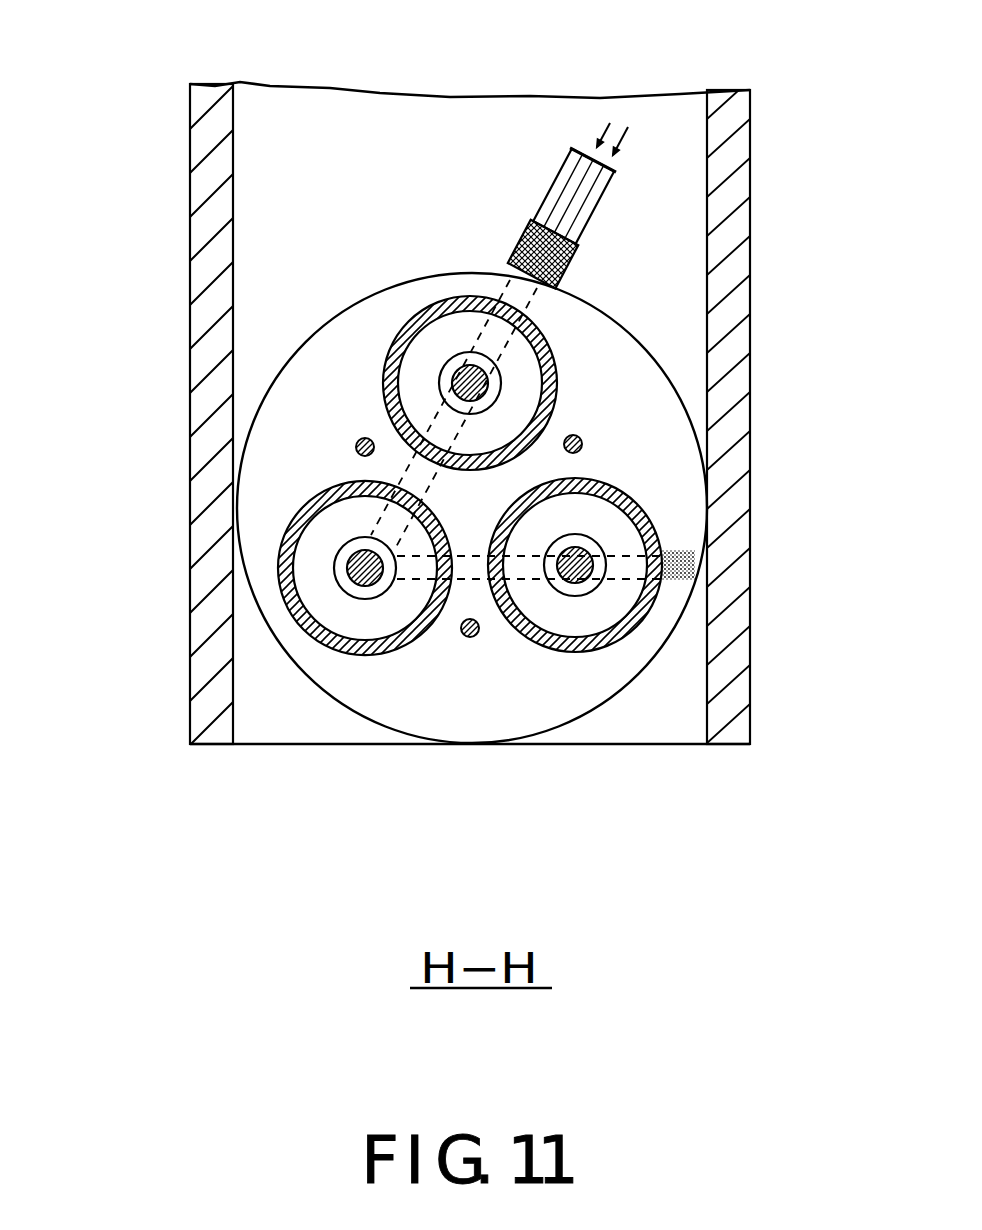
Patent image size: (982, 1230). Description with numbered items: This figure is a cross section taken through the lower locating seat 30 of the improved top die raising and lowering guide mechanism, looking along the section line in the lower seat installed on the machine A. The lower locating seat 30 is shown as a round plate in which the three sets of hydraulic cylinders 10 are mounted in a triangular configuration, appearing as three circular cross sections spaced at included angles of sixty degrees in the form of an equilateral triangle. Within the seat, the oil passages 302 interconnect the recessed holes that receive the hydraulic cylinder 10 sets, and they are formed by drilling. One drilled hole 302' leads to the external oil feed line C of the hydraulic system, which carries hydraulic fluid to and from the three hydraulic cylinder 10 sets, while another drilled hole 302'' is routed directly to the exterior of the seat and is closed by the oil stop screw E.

The hydraulic cylinders 10 is at (410, 370).
The lower locating seat 30 is at (360, 325).
The oil passages 302 is at (469, 650).
The hole for oil feed line 302' is at (446, 281).
The hole for oil stop screw 302'' is at (619, 470).
The machine A is at (650, 222).
The oil feed line C is at (567, 167).
The oil stop screw E is at (700, 542).